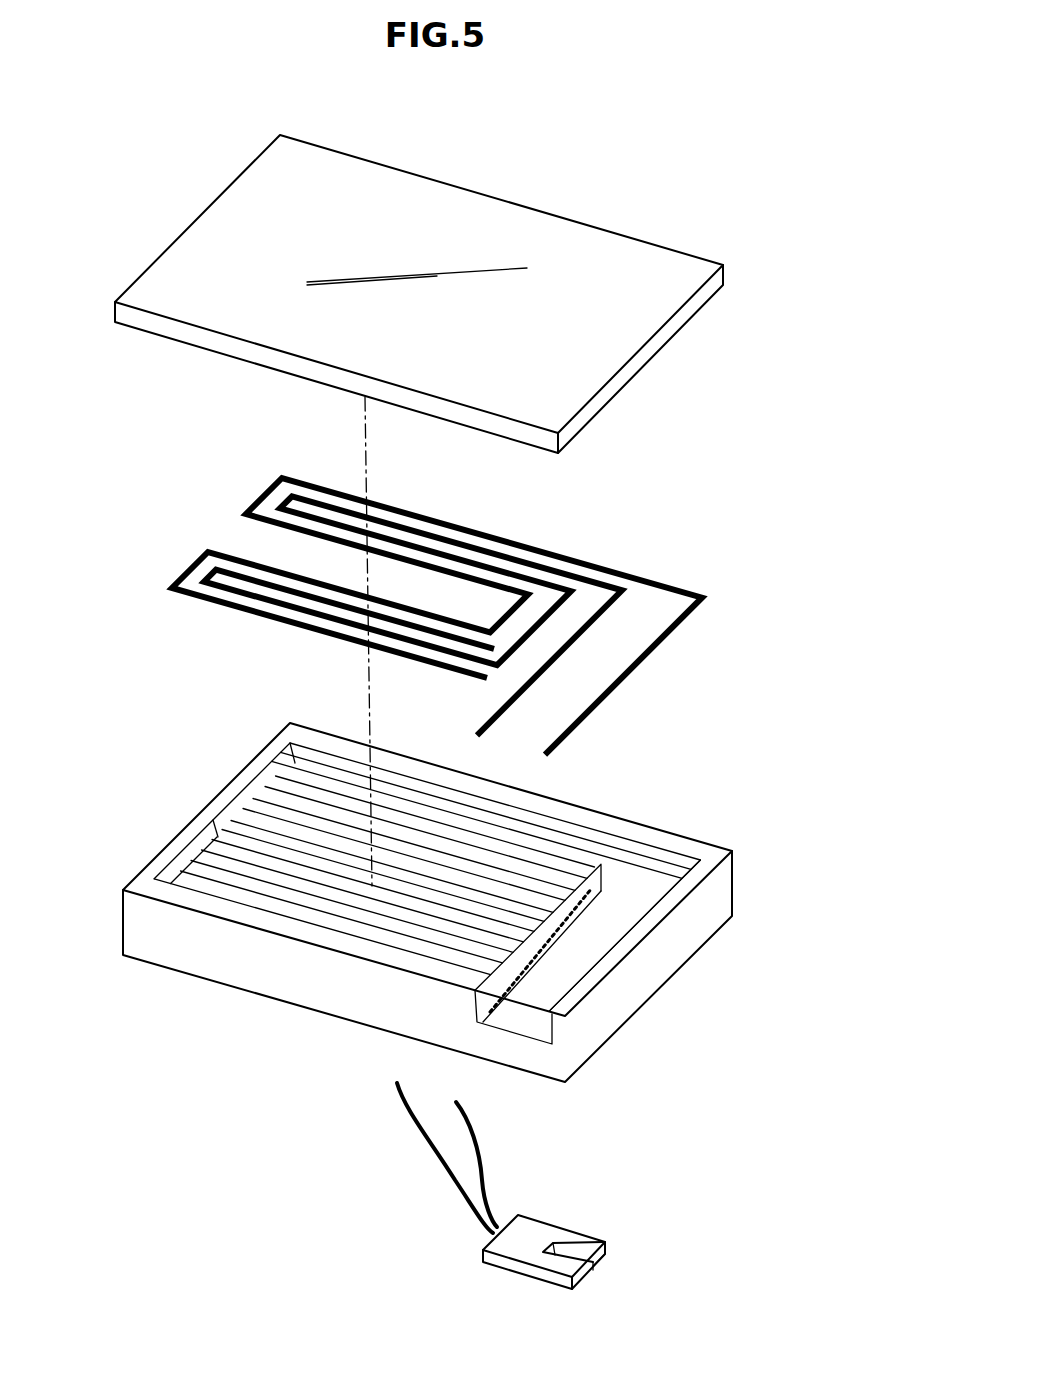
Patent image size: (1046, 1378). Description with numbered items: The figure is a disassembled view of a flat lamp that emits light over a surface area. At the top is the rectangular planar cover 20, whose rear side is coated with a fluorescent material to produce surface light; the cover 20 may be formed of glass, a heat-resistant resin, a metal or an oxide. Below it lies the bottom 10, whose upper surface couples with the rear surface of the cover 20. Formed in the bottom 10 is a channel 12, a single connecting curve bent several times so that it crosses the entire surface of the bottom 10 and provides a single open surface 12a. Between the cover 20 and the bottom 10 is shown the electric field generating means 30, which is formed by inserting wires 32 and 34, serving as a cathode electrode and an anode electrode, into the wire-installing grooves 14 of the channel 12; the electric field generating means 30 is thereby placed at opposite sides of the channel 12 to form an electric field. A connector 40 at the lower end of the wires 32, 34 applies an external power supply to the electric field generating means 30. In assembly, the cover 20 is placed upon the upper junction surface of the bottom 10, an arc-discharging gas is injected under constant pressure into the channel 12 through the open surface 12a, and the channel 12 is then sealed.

The bottom 10 is at (657, 970).
The channel 12 is at (620, 925).
The open surface 12a is at (513, 1043).
The wire-installing grooves 14 is at (483, 1023).
The cover 20 is at (592, 245).
The electric field generating means 30 is at (478, 629).
The wire 32 is at (547, 668).
The wire 34 is at (633, 670).
The connector 40 is at (579, 1237).